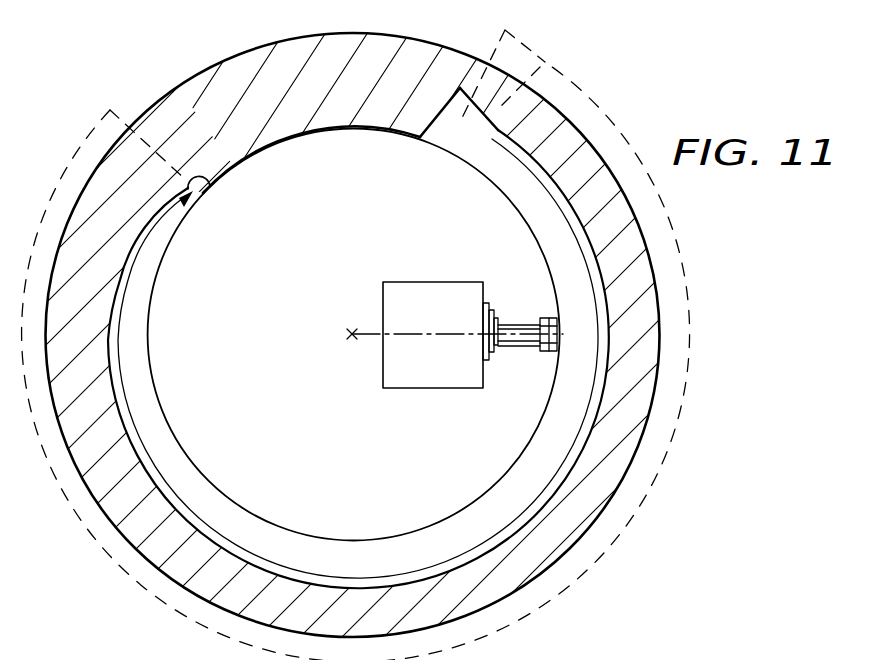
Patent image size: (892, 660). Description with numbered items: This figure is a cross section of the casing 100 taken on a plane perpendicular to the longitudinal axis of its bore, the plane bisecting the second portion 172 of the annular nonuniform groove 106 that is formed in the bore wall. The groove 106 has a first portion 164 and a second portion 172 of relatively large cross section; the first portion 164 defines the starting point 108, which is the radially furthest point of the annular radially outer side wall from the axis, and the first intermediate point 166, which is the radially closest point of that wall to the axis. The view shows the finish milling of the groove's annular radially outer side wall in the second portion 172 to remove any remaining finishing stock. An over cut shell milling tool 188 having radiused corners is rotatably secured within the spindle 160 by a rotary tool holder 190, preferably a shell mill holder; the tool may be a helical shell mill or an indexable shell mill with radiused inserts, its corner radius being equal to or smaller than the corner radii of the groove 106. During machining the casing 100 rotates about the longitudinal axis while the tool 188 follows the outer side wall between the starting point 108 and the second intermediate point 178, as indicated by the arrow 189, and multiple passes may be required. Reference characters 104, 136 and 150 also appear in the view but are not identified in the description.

The casing 100 is at (148, 99).
The inner bore surface 104 is at (499, 481).
The annular nonuniform groove 106 is at (422, 538).
The starting point 108 is at (459, 86).
The motor 136 is at (405, 272).
The axis 150 is at (352, 330).
The spindle 160 is at (490, 303).
The first portion of the annular nonuniform groove 164 is at (527, 47).
The first intermediate point 166 is at (478, 122).
The second portion of the annular nonuniform groove 172 is at (607, 124).
The second intermediate point 178 is at (211, 184).
The over cut shell milling tool 188 is at (547, 352).
The arrow 189 is at (266, 561).
The rotary tool holder 190 is at (500, 320).